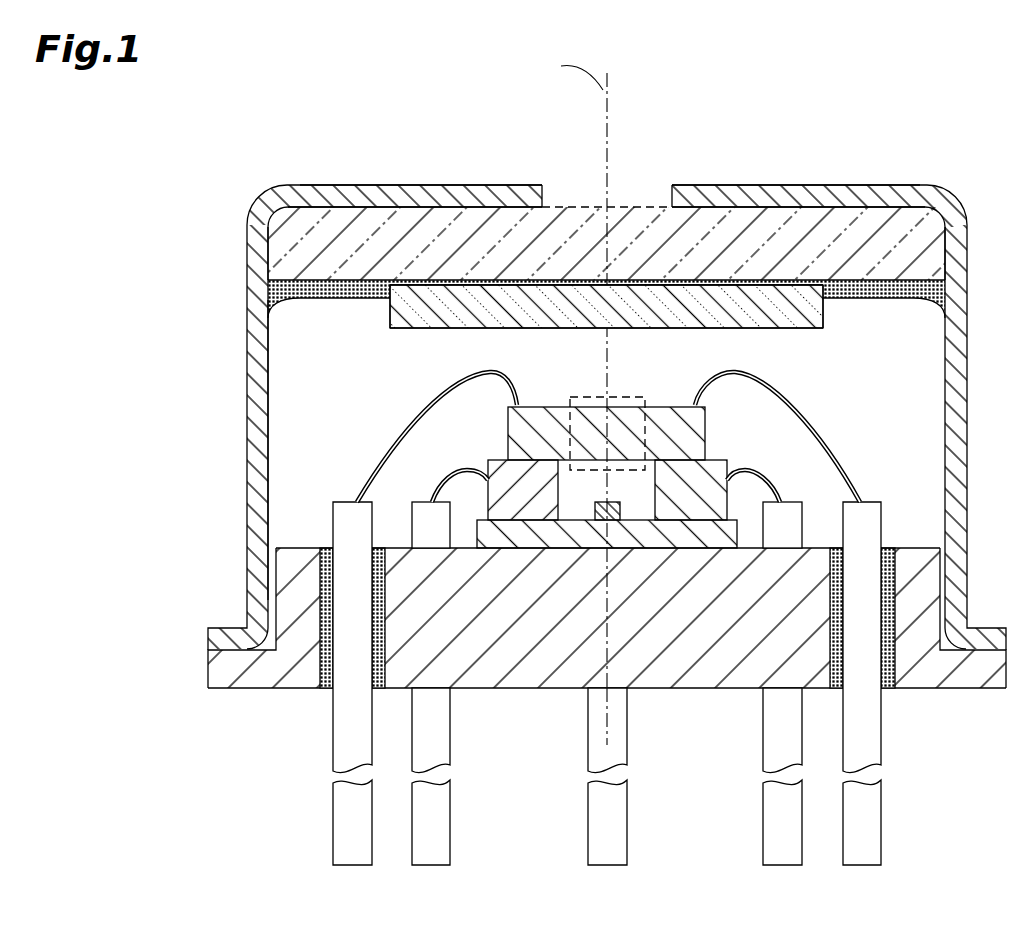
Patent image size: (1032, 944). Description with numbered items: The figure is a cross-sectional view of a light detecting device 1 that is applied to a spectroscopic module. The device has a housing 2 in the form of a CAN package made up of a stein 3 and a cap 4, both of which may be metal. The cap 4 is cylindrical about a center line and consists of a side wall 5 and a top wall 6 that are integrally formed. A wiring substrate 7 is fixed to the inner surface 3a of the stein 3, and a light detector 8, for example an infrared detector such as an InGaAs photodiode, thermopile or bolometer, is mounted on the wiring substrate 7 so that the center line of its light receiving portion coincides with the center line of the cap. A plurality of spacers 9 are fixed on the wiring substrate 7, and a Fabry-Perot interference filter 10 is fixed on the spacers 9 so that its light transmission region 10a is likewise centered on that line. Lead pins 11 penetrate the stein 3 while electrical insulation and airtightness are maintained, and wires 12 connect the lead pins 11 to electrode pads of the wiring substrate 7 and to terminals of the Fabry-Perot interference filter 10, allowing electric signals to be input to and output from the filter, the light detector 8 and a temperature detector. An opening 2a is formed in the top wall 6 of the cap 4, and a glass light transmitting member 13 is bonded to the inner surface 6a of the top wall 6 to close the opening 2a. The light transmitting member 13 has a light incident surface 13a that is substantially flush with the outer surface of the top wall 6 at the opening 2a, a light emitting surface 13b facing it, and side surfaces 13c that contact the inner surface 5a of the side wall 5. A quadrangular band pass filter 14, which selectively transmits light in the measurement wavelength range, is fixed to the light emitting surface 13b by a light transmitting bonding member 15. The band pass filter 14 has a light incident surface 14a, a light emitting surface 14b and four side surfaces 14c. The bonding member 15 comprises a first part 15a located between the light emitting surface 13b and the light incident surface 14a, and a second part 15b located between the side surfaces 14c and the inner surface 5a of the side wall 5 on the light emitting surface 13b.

The light detecting device 1 is at (859, 120).
The housing 2 is at (243, 300).
The opening 2a is at (655, 207).
The stein 3 is at (260, 680).
The inner surface of the stein 3a is at (296, 548).
The cap 4 is at (792, 190).
The side wall 5 is at (250, 468).
The inner surface of the side wall 5a is at (268, 441).
The top wall 6 is at (410, 200).
The inner surface of the top wall 6a is at (367, 216).
The wiring substrate 7 is at (668, 547).
The light detector 8 is at (601, 522).
The spacers 9 is at (488, 466).
The Fabry-Perot interference filter 10 is at (508, 418).
The light transmission region 10a is at (580, 397).
The lead pins 11 is at (430, 826).
The wires 12 is at (440, 478).
The light transmitting member 13 is at (766, 258).
The light incident surface 13a is at (578, 204).
The light emitting surface 13b is at (436, 288).
The side surfaces 13c is at (268, 243).
The band pass filter 14 is at (654, 322).
The light incident surface 14a is at (768, 285).
The light emitting surface 14b is at (792, 329).
The side surfaces 14c is at (387, 319).
The bonding member 15 is at (606, 257).
The first part 15a is at (485, 287).
The second part 15b is at (883, 296).